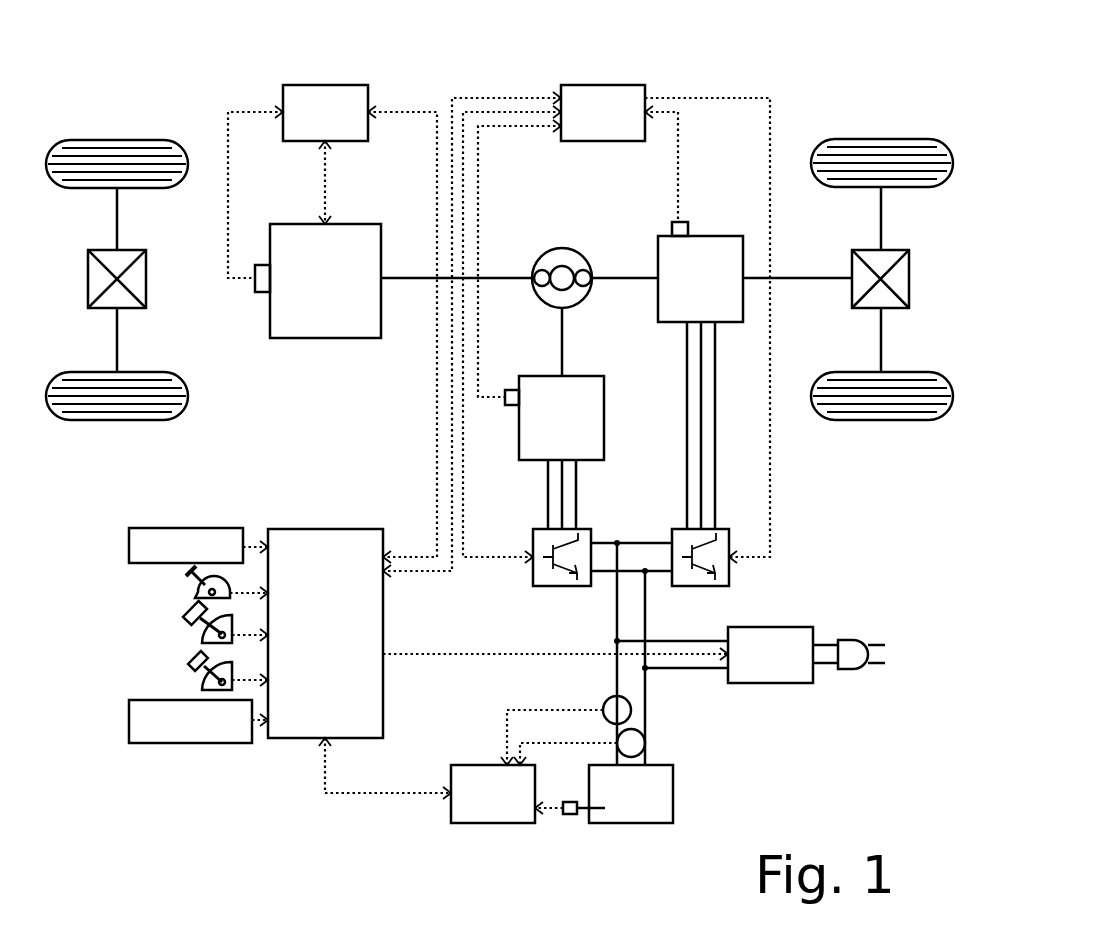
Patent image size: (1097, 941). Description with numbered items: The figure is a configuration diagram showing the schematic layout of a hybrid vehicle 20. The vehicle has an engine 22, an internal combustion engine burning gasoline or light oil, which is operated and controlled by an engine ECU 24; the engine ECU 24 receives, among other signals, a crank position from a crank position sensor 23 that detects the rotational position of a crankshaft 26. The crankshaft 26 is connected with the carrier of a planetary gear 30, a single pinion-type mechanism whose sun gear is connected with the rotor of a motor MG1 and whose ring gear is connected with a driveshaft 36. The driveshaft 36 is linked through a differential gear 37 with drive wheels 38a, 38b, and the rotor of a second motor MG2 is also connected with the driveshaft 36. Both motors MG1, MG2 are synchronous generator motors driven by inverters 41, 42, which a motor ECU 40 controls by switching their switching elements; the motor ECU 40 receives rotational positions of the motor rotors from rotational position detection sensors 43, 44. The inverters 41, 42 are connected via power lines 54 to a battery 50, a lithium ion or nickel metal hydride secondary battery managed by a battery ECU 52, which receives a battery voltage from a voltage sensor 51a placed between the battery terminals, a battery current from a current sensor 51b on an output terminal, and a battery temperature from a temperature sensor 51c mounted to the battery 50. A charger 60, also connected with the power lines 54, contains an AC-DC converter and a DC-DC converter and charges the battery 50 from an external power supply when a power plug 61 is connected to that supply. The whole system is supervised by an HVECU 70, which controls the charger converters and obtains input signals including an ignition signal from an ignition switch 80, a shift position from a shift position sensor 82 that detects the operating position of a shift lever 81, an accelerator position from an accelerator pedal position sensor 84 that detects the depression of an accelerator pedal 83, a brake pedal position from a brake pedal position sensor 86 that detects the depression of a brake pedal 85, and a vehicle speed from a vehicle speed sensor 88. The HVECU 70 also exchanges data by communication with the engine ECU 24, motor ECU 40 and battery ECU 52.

The hybrid vehicle 20 is at (748, 49).
The engine 22 is at (350, 224).
The crank position sensor 23 is at (263, 265).
The engine ECU 24 is at (327, 85).
The crankshaft 26 is at (394, 278).
The planetary gear 30 is at (564, 250).
The motor MG1 is at (589, 376).
The motor MG2 is at (716, 236).
The driveshaft 36 is at (819, 278).
The differential gear 37 is at (890, 250).
The drive wheel 38a is at (879, 139).
The drive wheel 38b is at (884, 420).
The motor ECU 40 is at (618, 85).
The inverter 41 is at (586, 529).
The inverter 42 is at (726, 529).
The rotational position detection sensor 43 is at (513, 390).
The rotational position detection sensor 44 is at (672, 229).
The battery 50 is at (673, 796).
The voltage sensor 51a is at (645, 743).
The current sensor 51b is at (631, 710).
The temperature sensor 51c is at (573, 814).
The battery ECU 52 is at (477, 765).
The power lines 54 is at (636, 568).
The charger 60 is at (770, 627).
The power plug 61 is at (861, 640).
The HVECU 70 is at (339, 529).
The ignition switch 80 is at (129, 545).
The shift lever 81 is at (190, 574).
The shift position sensor 82 is at (197, 596).
The accelerator pedal 83 is at (188, 612).
The accelerator pedal position sensor 84 is at (208, 637).
The brake pedal 85 is at (193, 665).
The brake pedal position sensor 86 is at (208, 682).
The vehicle speed sensor 88 is at (129, 718).